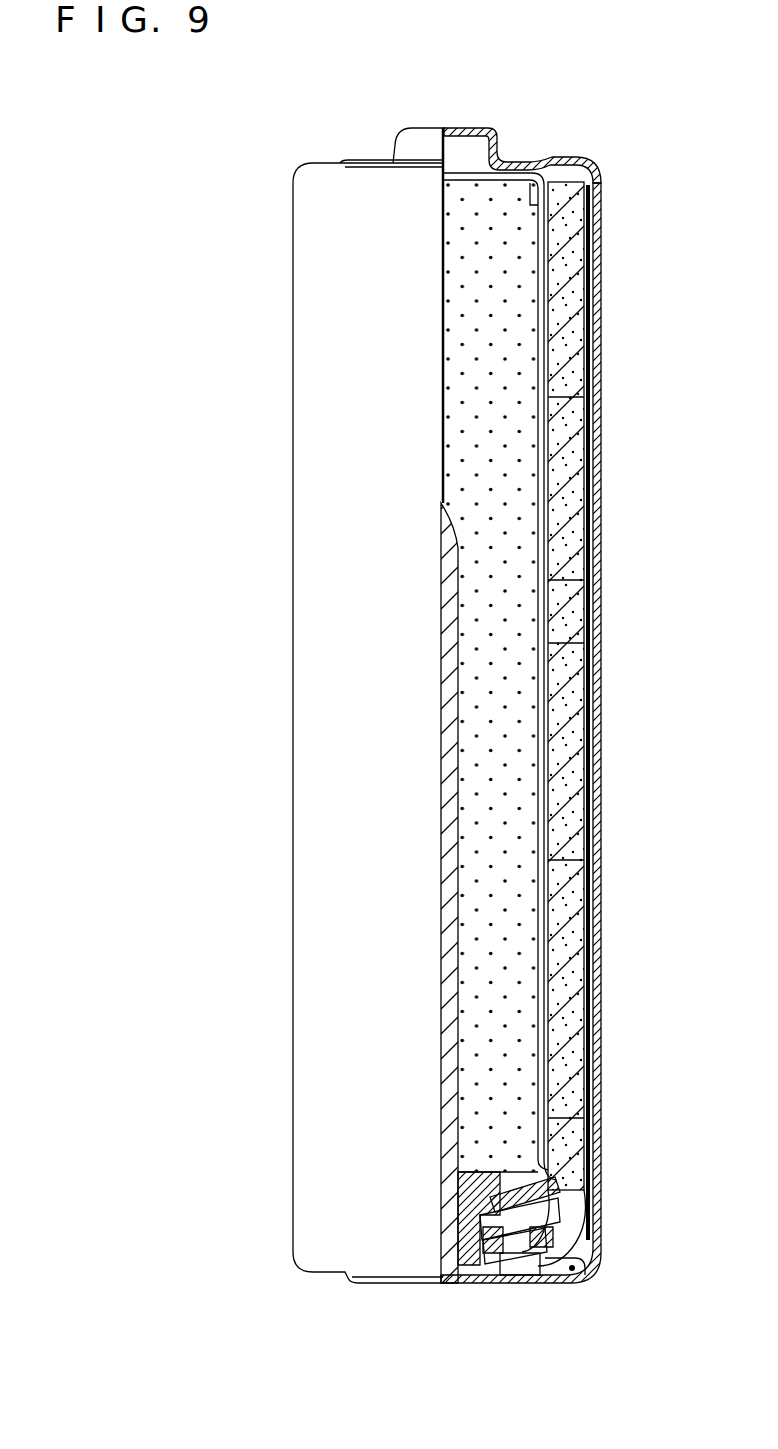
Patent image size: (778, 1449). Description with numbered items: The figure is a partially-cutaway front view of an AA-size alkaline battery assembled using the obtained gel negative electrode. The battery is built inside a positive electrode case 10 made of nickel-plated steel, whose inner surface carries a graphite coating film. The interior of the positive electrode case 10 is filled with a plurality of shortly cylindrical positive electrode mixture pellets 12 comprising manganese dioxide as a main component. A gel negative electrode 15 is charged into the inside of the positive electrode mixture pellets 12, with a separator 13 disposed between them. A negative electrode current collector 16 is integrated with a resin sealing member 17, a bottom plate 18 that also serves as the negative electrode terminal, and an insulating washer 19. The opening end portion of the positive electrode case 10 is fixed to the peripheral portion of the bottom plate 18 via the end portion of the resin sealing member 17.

The positive electrode case 10 is at (601, 637).
The positive electrode mixture pellets 12 is at (602, 364).
The separator 13 is at (565, 583).
The gel negative electrode 15 is at (520, 822).
The negative electrode current collector 16 is at (457, 1022).
The resin sealing member 17 is at (540, 1147).
The bottom plate 18 is at (523, 1280).
The insulating washer 19 is at (505, 1243).